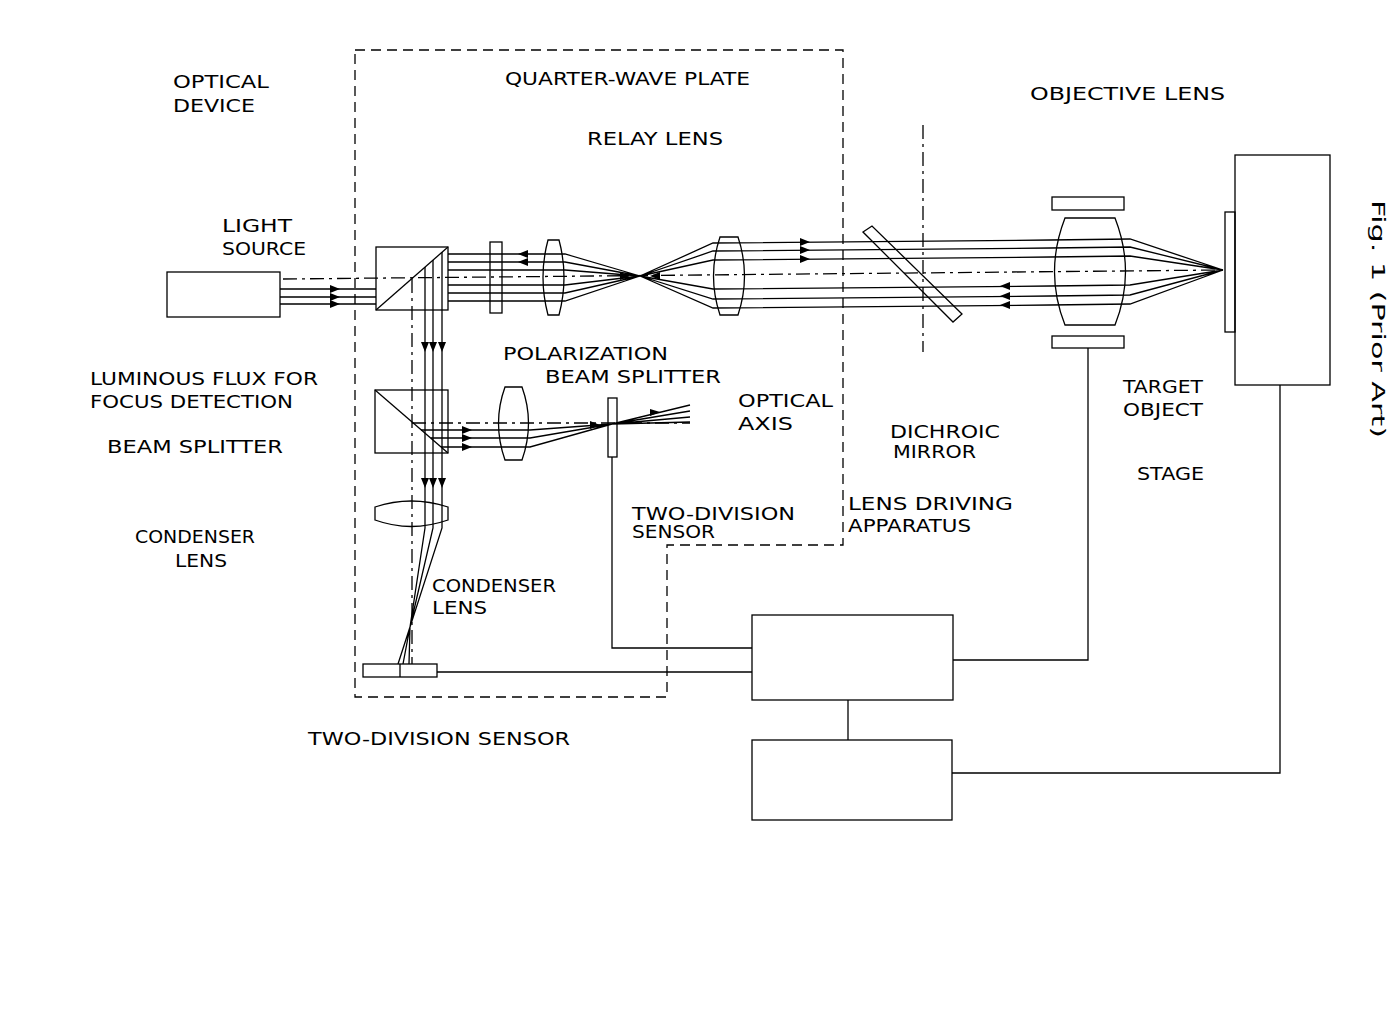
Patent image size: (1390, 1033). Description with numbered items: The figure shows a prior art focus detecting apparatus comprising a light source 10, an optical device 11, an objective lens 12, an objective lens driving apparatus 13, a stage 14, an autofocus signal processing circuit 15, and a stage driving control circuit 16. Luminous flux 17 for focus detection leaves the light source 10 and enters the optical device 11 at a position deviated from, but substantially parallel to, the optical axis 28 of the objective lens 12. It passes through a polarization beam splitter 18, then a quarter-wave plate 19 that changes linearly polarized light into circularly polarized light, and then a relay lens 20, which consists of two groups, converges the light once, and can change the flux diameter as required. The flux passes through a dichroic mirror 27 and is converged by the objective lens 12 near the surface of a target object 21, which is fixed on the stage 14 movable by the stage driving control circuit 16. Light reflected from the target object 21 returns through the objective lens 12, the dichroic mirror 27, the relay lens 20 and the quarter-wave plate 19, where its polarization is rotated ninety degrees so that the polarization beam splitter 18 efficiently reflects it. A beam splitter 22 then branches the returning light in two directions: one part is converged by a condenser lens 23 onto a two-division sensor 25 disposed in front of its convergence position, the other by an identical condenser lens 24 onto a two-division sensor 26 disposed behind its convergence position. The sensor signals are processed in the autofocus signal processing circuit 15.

The light source 10 is at (184, 284).
The optical device 11 is at (343, 130).
The objective lens 12 is at (1117, 220).
The objective lens driving apparatus 13 is at (1073, 350).
The stage 14 is at (1270, 367).
The autofocus signal processing circuit 15 is at (781, 616).
The stage driving control circuit 16 is at (758, 798).
The luminous flux for focus detection 17 is at (298, 300).
The polarization beam splitter 18 is at (450, 313).
The quarter-wave plate 19 is at (496, 242).
The relay lens 20 is at (722, 215).
The target object 21 is at (1224, 322).
The beam splitter 22 is at (375, 430).
The condenser lens 23 is at (505, 458).
The condenser lens 24 is at (380, 512).
The two-division sensor 25 is at (618, 445).
The two-division sensor 26 is at (376, 671).
The dichroic mirror 27 is at (950, 322).
The optical axis 28 is at (787, 275).